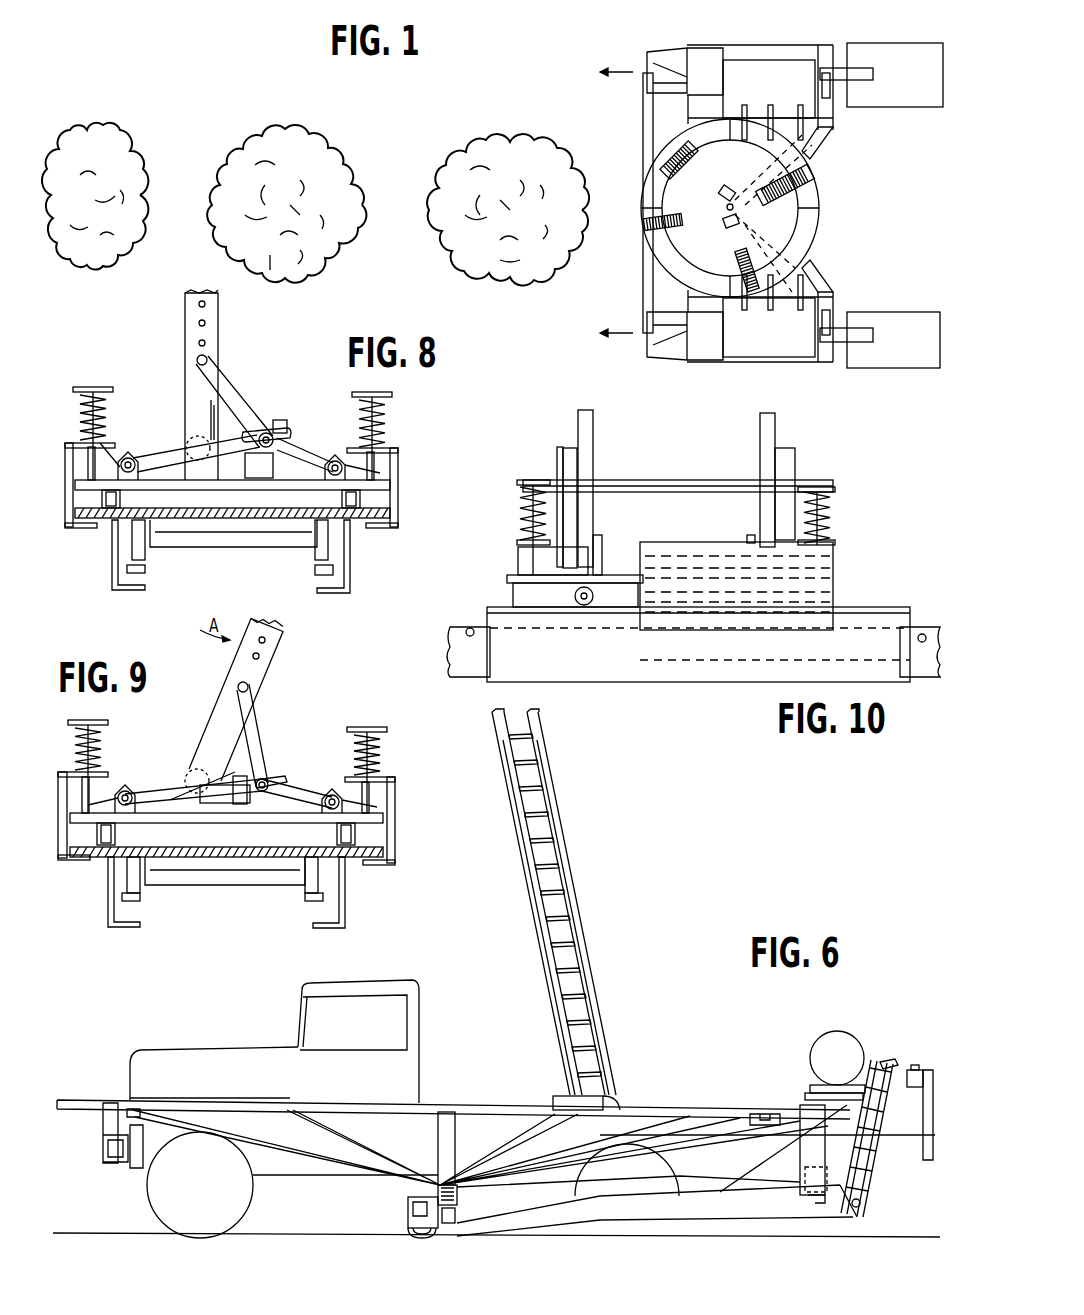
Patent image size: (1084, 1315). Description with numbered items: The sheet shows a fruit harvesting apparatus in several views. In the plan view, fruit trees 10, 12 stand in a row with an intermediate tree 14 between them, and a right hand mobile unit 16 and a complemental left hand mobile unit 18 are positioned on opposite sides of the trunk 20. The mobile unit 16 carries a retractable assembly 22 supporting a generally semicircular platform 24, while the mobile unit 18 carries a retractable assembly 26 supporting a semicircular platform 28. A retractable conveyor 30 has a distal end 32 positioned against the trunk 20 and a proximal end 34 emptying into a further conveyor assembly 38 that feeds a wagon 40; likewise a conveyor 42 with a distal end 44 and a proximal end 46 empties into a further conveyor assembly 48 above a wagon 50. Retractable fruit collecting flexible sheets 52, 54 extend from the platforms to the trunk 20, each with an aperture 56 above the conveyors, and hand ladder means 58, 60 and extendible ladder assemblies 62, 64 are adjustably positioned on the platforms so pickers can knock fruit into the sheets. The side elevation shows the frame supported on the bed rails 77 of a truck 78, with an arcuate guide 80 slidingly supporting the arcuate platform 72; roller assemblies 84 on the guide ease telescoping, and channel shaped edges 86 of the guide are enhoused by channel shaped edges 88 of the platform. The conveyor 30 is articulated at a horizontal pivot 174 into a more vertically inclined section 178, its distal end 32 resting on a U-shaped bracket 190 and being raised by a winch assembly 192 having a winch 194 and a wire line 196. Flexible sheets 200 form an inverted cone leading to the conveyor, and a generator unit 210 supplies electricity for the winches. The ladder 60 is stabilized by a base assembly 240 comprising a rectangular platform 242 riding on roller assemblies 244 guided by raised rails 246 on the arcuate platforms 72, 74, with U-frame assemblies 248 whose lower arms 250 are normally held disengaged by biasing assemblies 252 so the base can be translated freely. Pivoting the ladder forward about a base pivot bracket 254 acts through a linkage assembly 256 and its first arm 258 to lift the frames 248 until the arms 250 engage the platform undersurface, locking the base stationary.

In FIG. 1, the fruit tree 10 is at (530, 148).
In FIG. 1, the fruit tree 12 is at (138, 112).
In FIG. 1, the intermediate tree 14 is at (325, 143).
In FIG. 1, the right hand mobile unit 16 is at (748, 34).
In FIG. 1, the left hand mobile unit 18 is at (732, 362).
In FIG. 1, the trunk 20 is at (796, 200).
In FIG. 1, the retractable assembly 22 is at (750, 56).
In FIG. 1, the right hand semicircular platform 24 is at (776, 143).
In FIG. 1, the retractable assembly 26 is at (792, 350).
In FIG. 1, the left hand semicircular platform 28 is at (798, 241).
In FIG. 1, the retractable conveyor 30 is at (817, 148).
In FIG. 1, the distal end 32 is at (728, 175).
In FIG. 6, the distal end 32 is at (408, 1205).
In FIG. 1, the proximal end 34 is at (833, 127).
In FIG. 1, the further conveyor assembly 38 is at (838, 60).
In FIG. 1, the wagon 40 is at (935, 42).
In FIG. 1, the conveyor 42 is at (815, 270).
In FIG. 1, the distal end 44 is at (736, 220).
In FIG. 1, the proximal end 46 is at (838, 280).
In FIG. 1, the further conveyor assembly 48 is at (842, 346).
In FIG. 1, the wagon 50 is at (927, 376).
In FIG. 1, the right hand fruit collecting flexible sheets 52 is at (676, 179).
In FIG. 1, the left hand fruit collecting flexible sheets 54 is at (688, 242).
In FIG. 1, the aperture 56 is at (728, 205).
In FIG. 1, the hand ladder means 58 is at (666, 149).
In FIG. 1, the ladder 60 is at (818, 171).
In FIG. 8, the ladder 60 is at (185, 340).
In FIG. 6, the ladder 60 is at (582, 913).
In FIG. 1, the extendible ladder assembly 62 is at (644, 224).
In FIG. 1, the extendible ladder assembly 64 is at (740, 262).
In FIG. 6, the arcuate platform 72 is at (190, 1092).
In FIG. 8, the arcuate platform 74 is at (223, 518).
In FIG. 9, the arcuate platform 74 is at (225, 850).
In FIG. 6, the arcuate platform 74 is at (720, 1110).
In FIG. 6, the bed rails 77 is at (704, 1166).
In FIG. 6, the truck 78 is at (372, 988).
In FIG. 8, the arcuate guide 80 is at (256, 528).
In FIG. 8, the roller assemblies 84 is at (148, 560).
In FIG. 9, the roller assemblies 84 is at (140, 895).
In FIG. 10, the roller assemblies 84 is at (472, 615).
In FIG. 8, the channel shaped edges 86 is at (140, 573).
In FIG. 9, the channel shaped edges 86 is at (140, 903).
In FIG. 8, the channel shaped edges 88 is at (112, 565).
In FIG. 9, the channel shaped edges 88 is at (108, 895).
In FIG. 6, the horizontal pivot 174 is at (863, 1210).
In FIG. 6, the vertically inclined section 178 is at (875, 1173).
In FIG. 6, the U-shaped bracket 190 is at (415, 1240).
In FIG. 6, the winch assembly 192 is at (887, 1058).
In FIG. 6, the winch 194 is at (938, 1048).
In FIG. 6, the wire line 196 is at (768, 1166).
In FIG. 6, the flexible sheets 200 is at (262, 1136).
In FIG. 6, the generator unit 210 is at (808, 1050).
In FIG. 8, the base assembly 240 is at (404, 440).
In FIG. 10, the base assembly 240 is at (815, 472).
In FIG. 6, the base assembly 240 is at (619, 1085).
In FIG. 8, the rectangular platform 242 is at (320, 454).
In FIG. 8, the roller assemblies 244 is at (388, 495).
In FIG. 8, the raised rails 246 is at (102, 504).
In FIG. 8, the U-frame assemblies 248 is at (398, 527).
In FIG. 9, the U-frame assemblies 248 is at (60, 775).
In FIG. 10, the U-frame assemblies 248 is at (833, 568).
In FIG. 8, the lower arms 250 is at (83, 529).
In FIG. 9, the lower arms 250 is at (80, 860).
In FIG. 8, the biasing assemblies 252 is at (77, 388).
In FIG. 10, the biasing assemblies 252 is at (515, 498).
In FIG. 9, the base pivot bracket 254 is at (172, 783).
In FIG. 10, the base pivot bracket 254 is at (598, 535).
In FIG. 9, the linkage assembly 256 is at (274, 748).
In FIG. 10, the linkage assembly 256 is at (547, 562).
In FIG. 9, the first arm 258 is at (254, 708).